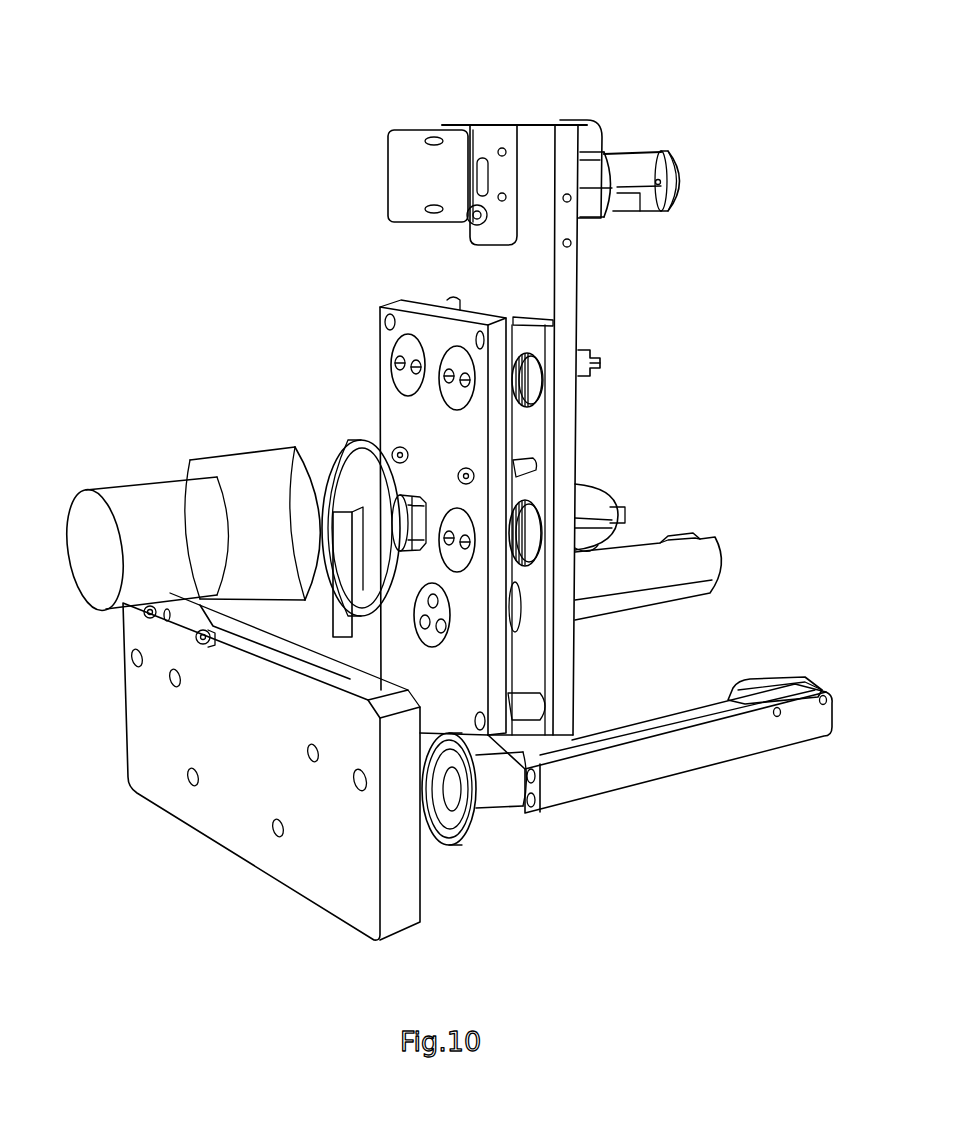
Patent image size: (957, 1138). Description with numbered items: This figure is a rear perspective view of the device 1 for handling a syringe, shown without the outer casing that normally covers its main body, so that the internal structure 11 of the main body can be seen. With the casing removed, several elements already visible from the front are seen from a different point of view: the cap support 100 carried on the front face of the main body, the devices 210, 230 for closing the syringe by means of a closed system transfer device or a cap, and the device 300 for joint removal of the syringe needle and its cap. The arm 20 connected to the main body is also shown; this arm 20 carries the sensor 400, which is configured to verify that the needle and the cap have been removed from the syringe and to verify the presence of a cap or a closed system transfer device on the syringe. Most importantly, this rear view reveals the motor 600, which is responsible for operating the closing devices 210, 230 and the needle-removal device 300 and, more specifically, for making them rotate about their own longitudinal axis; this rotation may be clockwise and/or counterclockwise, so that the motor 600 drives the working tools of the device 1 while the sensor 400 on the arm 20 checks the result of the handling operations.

The device 1 is at (471, 97).
The internal structure 11 is at (400, 304).
The arm 20 is at (660, 757).
The cap support 100 is at (680, 150).
The device for closing the syringe 210 is at (586, 352).
The device for closing the syringe 230 is at (588, 483).
The device for joint removal of the syringe needle and its cap 300 is at (680, 532).
The sensor 400 is at (764, 682).
The motor 600 is at (153, 500).